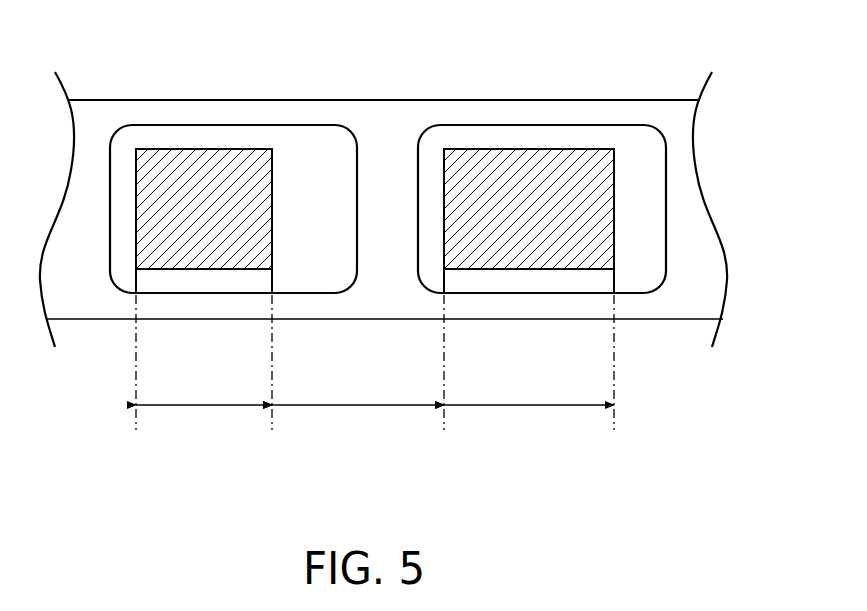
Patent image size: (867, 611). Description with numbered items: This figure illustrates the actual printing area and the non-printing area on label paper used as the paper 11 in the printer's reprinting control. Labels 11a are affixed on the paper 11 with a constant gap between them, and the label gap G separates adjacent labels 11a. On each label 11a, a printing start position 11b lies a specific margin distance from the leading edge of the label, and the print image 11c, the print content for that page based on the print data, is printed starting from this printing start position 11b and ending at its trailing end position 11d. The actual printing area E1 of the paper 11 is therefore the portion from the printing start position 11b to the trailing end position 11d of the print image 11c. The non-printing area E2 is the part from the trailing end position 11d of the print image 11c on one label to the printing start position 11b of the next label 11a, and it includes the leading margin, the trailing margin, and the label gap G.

The paper 11 is at (657, 97).
The label 11a is at (252, 125).
The printing start position 11b is at (136, 372).
The print image 11c is at (192, 148).
The trailing end position 11d is at (272, 372).
The actual printing area E1 is at (203, 409).
The non-printing area E2 is at (360, 409).
The label gap G is at (396, 217).